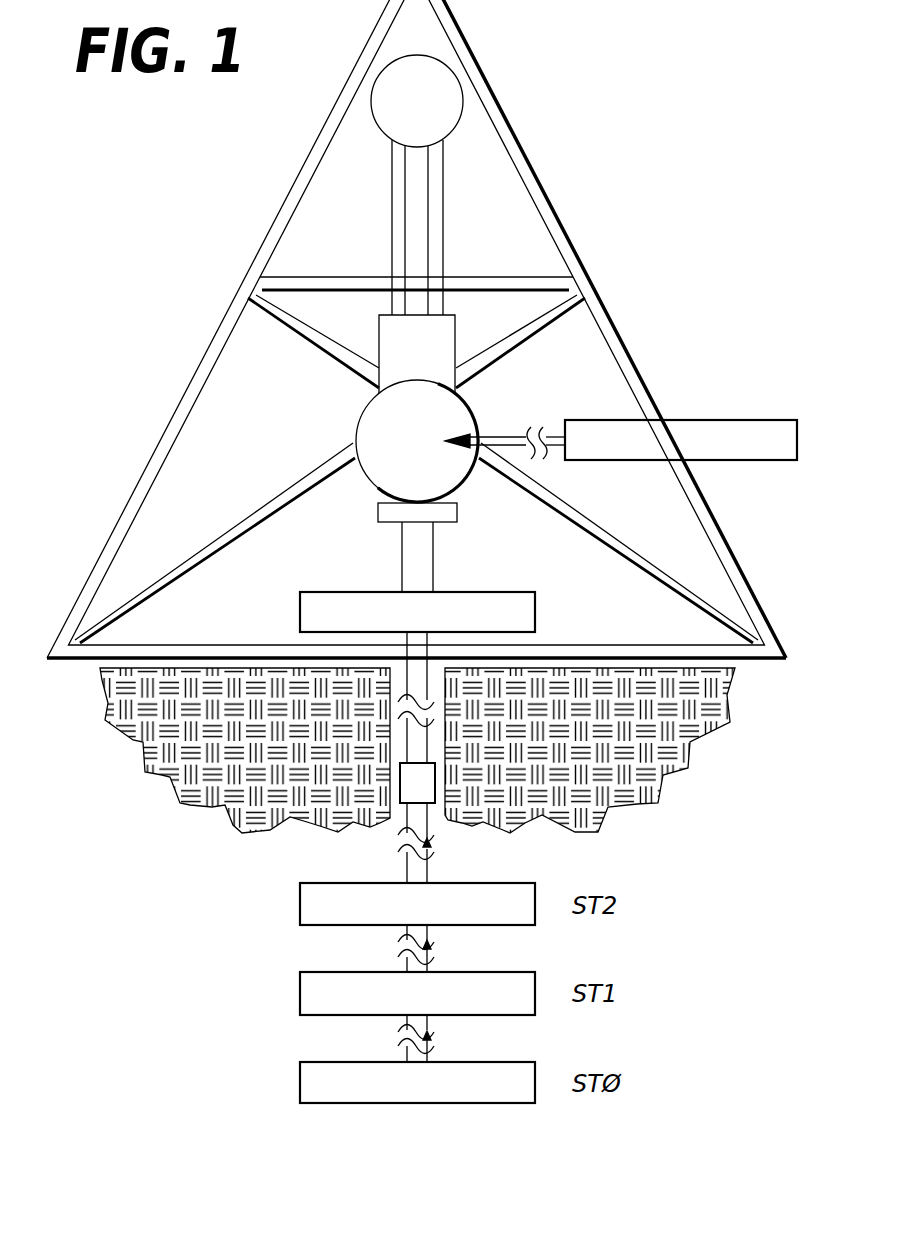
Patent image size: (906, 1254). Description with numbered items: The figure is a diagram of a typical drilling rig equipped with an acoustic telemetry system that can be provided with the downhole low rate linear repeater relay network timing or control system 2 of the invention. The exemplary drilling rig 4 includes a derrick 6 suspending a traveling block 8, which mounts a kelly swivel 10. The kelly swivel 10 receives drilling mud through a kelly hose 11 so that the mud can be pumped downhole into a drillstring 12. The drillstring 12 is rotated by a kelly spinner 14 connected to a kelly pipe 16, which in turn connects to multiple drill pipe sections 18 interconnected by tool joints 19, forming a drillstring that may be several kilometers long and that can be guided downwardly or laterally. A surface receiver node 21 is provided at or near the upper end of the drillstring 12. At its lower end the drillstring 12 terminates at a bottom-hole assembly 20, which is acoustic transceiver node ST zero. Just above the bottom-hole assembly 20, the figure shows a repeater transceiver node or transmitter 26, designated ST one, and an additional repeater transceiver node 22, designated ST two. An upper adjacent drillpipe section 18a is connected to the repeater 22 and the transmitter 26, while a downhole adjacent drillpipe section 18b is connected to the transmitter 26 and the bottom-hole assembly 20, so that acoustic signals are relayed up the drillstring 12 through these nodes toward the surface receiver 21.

The downhole low rate linear repeater relay network timing or control system 2 is at (667, 868).
The drilling rig 4 is at (600, 125).
The derrick 6 is at (485, 78).
The traveling block 8 is at (405, 360).
The kelly swivel 10 is at (402, 454).
The kelly hose 11 is at (500, 437).
The drillstring 12 is at (434, 605).
The kelly spinner 14 is at (455, 521).
The kelly pipe 16 is at (433, 572).
The drill pipe sections 18 is at (424, 856).
The upper adjacent drillpipe section 18a is at (427, 965).
The downhole adjacent drillpipe section 18b is at (427, 1023).
The tool joints 19 is at (399, 805).
The bottom-hole assembly (BHA) 20 is at (300, 1064).
The surface receiver (node) 21 is at (300, 590).
The additional repeater transceiver node 22 is at (300, 885).
The repeater transceiver node (transmitter) 26 is at (300, 974).